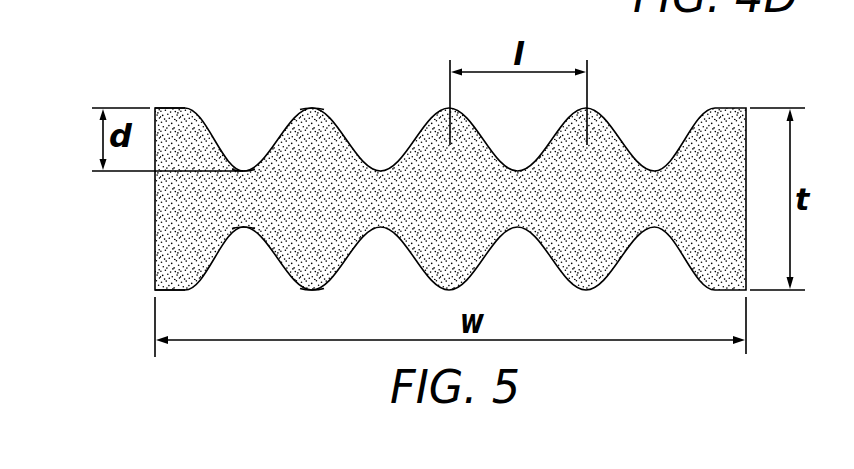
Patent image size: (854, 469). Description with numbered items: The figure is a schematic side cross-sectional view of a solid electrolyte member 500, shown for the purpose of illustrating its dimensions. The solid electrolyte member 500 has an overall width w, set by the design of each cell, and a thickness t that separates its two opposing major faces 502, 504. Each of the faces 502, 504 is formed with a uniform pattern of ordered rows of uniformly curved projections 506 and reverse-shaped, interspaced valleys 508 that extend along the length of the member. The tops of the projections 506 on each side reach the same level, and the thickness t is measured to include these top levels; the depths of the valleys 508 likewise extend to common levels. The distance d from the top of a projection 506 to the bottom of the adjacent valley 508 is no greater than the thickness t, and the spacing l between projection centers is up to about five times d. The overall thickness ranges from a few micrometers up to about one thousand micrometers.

The solid electrolyte member 500 is at (181, 56).
The first major face 502 is at (168, 107).
The second major face 504 is at (168, 292).
The curved projections 506 is at (313, 107).
The valleys 508 is at (244, 170).